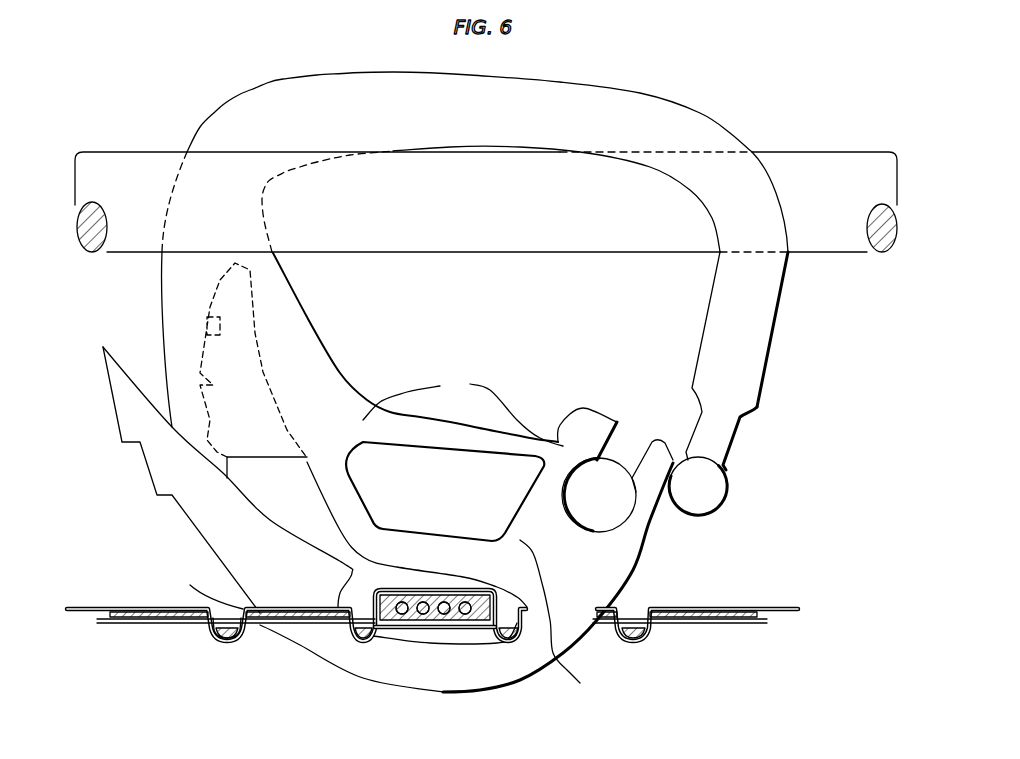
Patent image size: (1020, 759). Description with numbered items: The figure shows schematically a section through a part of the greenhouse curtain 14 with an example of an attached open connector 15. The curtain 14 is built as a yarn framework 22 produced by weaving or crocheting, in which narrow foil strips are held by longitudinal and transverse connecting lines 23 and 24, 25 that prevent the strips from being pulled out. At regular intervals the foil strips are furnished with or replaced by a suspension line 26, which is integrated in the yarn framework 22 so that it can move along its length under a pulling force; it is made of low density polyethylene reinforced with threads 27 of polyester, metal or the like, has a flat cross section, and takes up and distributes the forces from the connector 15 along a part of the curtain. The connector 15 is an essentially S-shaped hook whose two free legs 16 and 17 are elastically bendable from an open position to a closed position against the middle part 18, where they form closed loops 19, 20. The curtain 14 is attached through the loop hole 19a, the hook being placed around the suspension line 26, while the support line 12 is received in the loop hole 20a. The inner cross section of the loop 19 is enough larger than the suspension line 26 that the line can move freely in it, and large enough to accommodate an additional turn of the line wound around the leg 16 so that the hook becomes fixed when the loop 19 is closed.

The support line 12 is at (830, 254).
The greenhouse curtain 14 is at (416, 615).
The connector 15 is at (454, 395).
The free leg 16 is at (185, 502).
The free leg 17 is at (742, 402).
The middle part 18 is at (463, 409).
The loop 19 is at (436, 501).
The loop hole 19a is at (430, 640).
The loop 20 is at (477, 372).
The loop hole 20a is at (468, 317).
The yarn framework 22 is at (213, 632).
The longitudinal connecting line 23 is at (222, 636).
The transverse connecting line 24 is at (182, 612).
The transverse connecting line 25 is at (70, 612).
The suspension line 26 is at (435, 620).
The reinforcing thread 27 is at (423, 596).